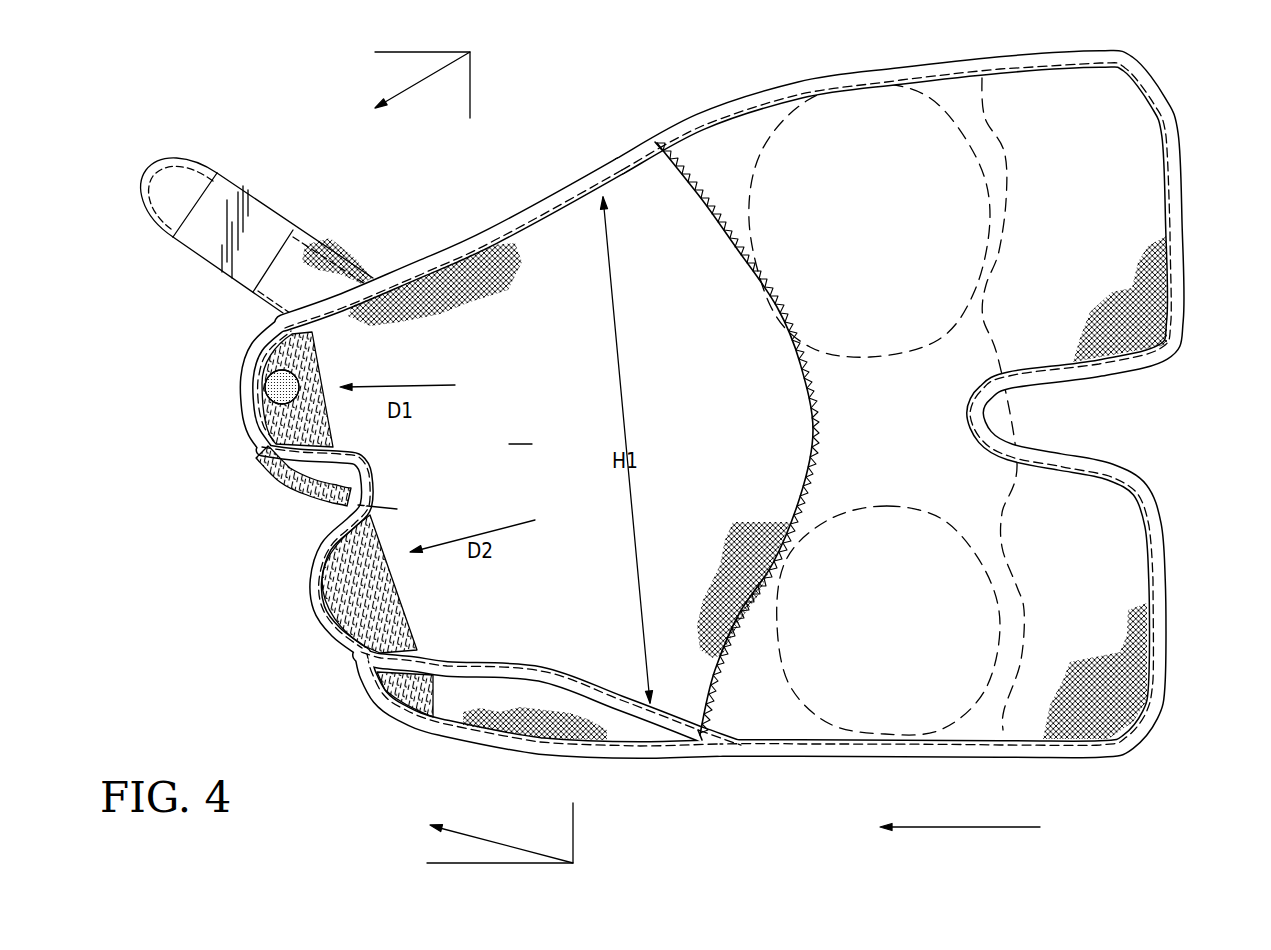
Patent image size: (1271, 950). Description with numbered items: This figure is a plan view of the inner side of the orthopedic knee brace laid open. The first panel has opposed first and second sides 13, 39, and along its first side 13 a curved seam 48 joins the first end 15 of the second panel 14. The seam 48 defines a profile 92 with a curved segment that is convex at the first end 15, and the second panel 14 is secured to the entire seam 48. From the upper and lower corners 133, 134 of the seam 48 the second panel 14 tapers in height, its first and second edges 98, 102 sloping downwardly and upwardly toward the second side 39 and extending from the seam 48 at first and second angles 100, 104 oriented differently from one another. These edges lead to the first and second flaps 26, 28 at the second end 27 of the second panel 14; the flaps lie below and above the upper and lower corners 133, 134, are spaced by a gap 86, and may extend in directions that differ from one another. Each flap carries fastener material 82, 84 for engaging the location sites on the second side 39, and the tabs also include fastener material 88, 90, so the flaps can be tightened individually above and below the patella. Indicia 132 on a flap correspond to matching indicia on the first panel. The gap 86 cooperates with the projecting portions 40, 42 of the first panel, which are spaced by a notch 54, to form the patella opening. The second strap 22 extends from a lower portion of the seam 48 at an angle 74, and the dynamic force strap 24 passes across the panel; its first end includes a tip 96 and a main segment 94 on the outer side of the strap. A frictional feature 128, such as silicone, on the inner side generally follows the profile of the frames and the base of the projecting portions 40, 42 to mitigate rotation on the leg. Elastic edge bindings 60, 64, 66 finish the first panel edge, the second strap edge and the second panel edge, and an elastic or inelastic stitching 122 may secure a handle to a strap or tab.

The first side 13 is at (822, 453).
The second panel 14 is at (520, 333).
The first end 15 is at (783, 542).
The second strap 22 is at (462, 695).
The dynamic force strap 24 is at (324, 240).
The first flap 26 is at (240, 357).
The second end 27 is at (357, 512).
The second flap 28 is at (308, 590).
The second side 39 is at (1148, 298).
The projecting portion 40 is at (1138, 132).
The projecting portion 42 is at (1125, 618).
The seam 48 is at (727, 650).
The notch 54 is at (995, 413).
The edge binding 60 is at (885, 70).
The edge binding 64 is at (522, 743).
The second panel edge binding 66 is at (572, 185).
The angle 74 is at (960, 843).
The fastener material 82 is at (285, 335).
The fastener material 84 is at (350, 620).
The gap 86 is at (340, 503).
The fastener material 88 is at (287, 476).
The fastener material 90 is at (410, 700).
The profile 92 is at (797, 360).
The main segment 94 is at (250, 215).
The tip 96 is at (172, 158).
The first edge 98 is at (400, 285).
The first angle 100 is at (418, 85).
The second edge 102 is at (612, 703).
The second angle 104 is at (489, 833).
The stitching 122 is at (360, 648).
The frictional feature 128 is at (763, 143).
The indicia 132 is at (272, 385).
The upper corner 133 is at (655, 145).
The lower corner 134 is at (697, 733).